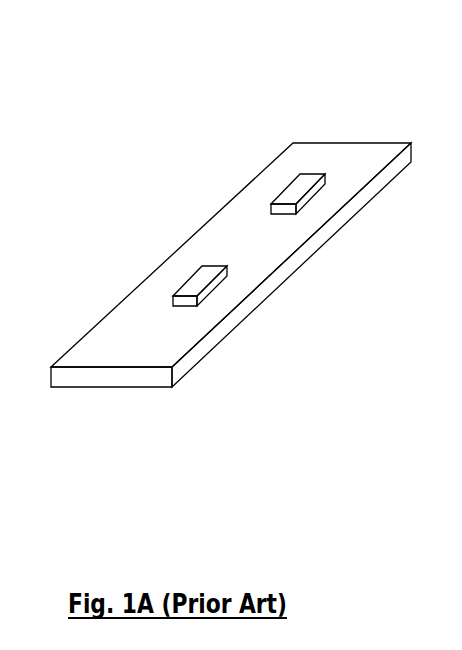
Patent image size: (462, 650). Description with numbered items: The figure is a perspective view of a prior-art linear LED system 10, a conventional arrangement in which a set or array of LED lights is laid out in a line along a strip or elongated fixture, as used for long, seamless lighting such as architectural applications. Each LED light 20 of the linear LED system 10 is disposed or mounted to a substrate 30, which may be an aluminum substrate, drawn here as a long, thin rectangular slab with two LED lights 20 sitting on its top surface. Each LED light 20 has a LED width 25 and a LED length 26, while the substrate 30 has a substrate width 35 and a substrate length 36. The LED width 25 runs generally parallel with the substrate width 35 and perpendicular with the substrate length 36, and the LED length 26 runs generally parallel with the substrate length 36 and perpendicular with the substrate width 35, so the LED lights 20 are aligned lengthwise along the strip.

The linear LED system 10 is at (231, 241).
The LED light 20 is at (281, 174).
The LED width 25 is at (227, 336).
The LED length 26 is at (224, 303).
The substrate 30 is at (174, 228).
The substrate width 35 is at (111, 401).
The substrate length 36 is at (317, 275).